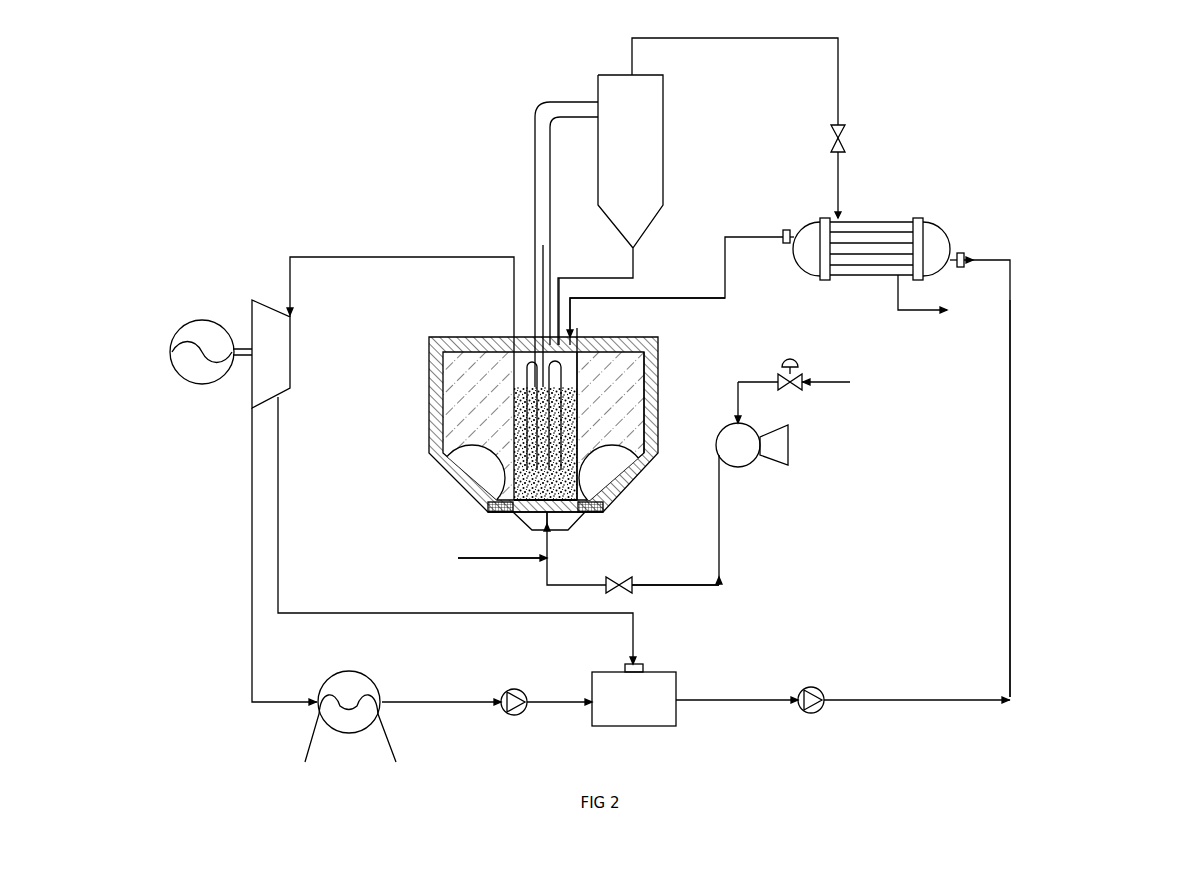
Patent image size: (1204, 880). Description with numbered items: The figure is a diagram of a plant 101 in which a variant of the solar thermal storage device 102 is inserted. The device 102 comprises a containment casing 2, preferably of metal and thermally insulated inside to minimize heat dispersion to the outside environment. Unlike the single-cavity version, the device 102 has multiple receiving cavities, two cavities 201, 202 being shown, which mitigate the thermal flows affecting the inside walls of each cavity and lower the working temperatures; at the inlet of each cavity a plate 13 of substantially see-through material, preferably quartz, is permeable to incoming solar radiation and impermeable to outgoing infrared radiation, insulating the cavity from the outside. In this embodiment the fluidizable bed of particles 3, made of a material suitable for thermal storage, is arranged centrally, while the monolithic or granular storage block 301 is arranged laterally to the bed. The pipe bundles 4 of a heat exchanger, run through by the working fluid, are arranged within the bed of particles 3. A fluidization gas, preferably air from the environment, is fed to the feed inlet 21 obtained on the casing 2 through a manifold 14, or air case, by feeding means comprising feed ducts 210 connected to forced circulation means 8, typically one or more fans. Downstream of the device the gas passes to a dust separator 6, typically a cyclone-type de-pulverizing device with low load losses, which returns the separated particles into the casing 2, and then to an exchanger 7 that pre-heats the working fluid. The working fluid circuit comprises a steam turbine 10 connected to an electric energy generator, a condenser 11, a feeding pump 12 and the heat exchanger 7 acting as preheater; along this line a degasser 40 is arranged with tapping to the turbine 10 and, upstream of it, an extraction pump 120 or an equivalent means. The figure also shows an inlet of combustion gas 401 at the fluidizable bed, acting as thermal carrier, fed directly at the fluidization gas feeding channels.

The containment casing 2 is at (440, 377).
The fluidizable bed of particles 3 is at (573, 497).
The pipe bundles 4 is at (517, 353).
The dust separator 6 is at (650, 132).
The heat exchanger 7 is at (938, 240).
The forced circulation means 8 is at (752, 453).
The steam turbine 10 is at (273, 353).
The condenser 11 is at (350, 722).
The feeding pump 12 is at (817, 705).
The plate 13 is at (475, 490).
The manifold 14 is at (553, 517).
The feed inlet 21 is at (530, 507).
The degasser 40 is at (640, 715).
The plant 101 is at (1162, 392).
The device 102 is at (690, 355).
The extraction pump 120 is at (518, 715).
The receiving cavity 201 is at (478, 465).
The receiving cavity 202 is at (607, 462).
The feed ducts 210 is at (685, 587).
The storage block 301 is at (617, 396).
The inlet of combustion gas 401 is at (492, 560).